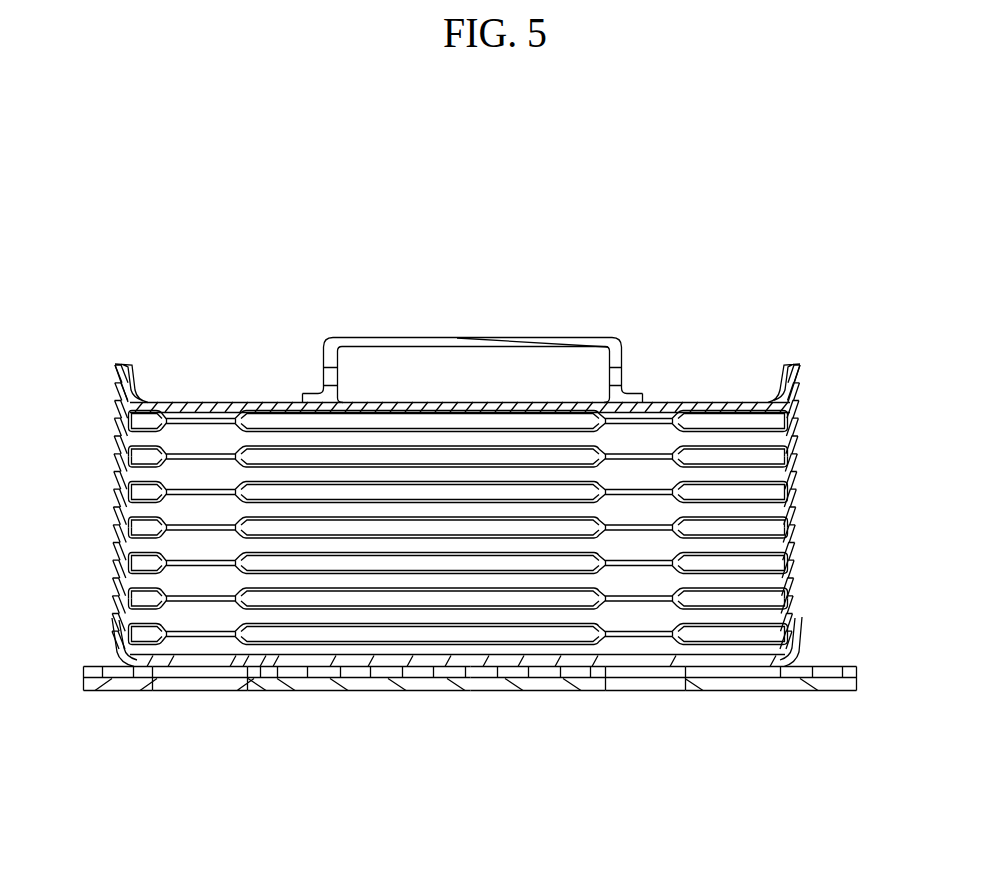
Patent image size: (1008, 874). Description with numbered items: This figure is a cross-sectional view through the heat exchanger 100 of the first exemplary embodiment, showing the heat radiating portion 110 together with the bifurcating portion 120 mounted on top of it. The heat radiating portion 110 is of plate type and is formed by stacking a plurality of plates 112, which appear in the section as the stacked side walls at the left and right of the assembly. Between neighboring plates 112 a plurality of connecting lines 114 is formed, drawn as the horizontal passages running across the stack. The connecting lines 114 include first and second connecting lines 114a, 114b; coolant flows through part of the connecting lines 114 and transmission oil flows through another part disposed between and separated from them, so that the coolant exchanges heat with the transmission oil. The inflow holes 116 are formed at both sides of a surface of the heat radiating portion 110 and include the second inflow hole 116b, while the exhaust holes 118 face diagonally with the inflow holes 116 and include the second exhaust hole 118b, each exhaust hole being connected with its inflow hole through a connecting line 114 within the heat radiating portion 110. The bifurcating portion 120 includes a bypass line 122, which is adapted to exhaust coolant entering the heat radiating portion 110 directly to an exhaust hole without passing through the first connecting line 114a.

The heat exchanger 100 is at (456, 188).
The heat radiating portion 110 is at (96, 367).
The plates 112 is at (800, 410).
The connecting lines 114 is at (458, 628).
The first connecting line 114a is at (391, 446).
The second connecting line 114b is at (282, 462).
The inflow holes 116 is at (277, 745).
The second inflow hole 116b is at (197, 698).
The exhaust holes 118 is at (664, 745).
The second exhaust hole 118b is at (640, 698).
The bifurcating portion 120 is at (473, 326).
The bypass line 122 is at (465, 386).